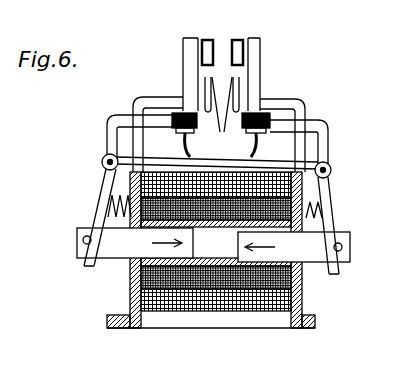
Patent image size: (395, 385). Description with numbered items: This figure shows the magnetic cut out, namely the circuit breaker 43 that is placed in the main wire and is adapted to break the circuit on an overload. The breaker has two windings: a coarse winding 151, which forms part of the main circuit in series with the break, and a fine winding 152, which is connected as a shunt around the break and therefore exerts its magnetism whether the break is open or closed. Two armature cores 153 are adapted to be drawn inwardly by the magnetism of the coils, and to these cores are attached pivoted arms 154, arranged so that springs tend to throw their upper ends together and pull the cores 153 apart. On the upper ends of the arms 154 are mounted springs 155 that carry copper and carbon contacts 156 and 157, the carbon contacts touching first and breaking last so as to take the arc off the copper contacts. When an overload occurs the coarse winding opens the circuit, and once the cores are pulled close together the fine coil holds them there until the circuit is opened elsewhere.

The circuit breaker 43 is at (85, 193).
The coarse winding 151 is at (185, 302).
The fine winding 152 is at (262, 307).
The armature cores 153 is at (128, 240).
The pivoted arms 154 is at (108, 182).
The springs 155 is at (193, 113).
The copper contact 156 is at (222, 116).
The carbon contact 157 is at (238, 50).